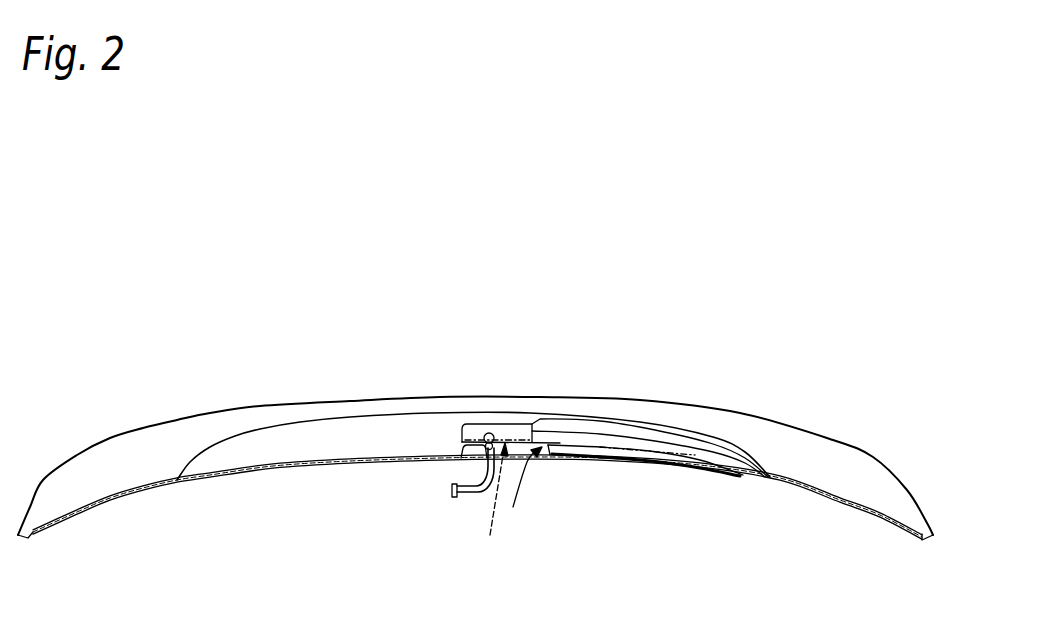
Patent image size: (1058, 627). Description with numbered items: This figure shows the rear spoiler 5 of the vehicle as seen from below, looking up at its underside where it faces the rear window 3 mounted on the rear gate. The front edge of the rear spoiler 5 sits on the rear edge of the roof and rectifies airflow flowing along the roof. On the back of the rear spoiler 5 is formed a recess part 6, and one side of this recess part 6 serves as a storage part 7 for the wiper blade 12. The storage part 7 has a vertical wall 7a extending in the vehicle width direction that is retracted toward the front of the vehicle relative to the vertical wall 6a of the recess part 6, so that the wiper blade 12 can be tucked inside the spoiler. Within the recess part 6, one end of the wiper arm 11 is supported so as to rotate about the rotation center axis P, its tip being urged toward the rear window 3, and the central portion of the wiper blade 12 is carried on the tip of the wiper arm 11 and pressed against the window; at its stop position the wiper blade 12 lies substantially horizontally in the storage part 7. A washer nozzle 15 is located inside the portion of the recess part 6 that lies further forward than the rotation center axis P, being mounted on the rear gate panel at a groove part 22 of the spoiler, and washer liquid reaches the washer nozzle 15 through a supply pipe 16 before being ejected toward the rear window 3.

The rear window 3 is at (274, 464).
The rear spoiler 5 is at (792, 432).
The recess part 6 is at (410, 429).
The vertical wall 6a is at (346, 435).
The storage part 7 is at (522, 487).
The vertical wall 7a is at (655, 435).
The wiper arm 11 is at (557, 423).
The wiper blade 12 is at (705, 448).
The washer nozzle 15 is at (484, 550).
The supply pipe 16 is at (457, 493).
The groove part 22 is at (487, 510).
The rotation center axis P is at (475, 472).